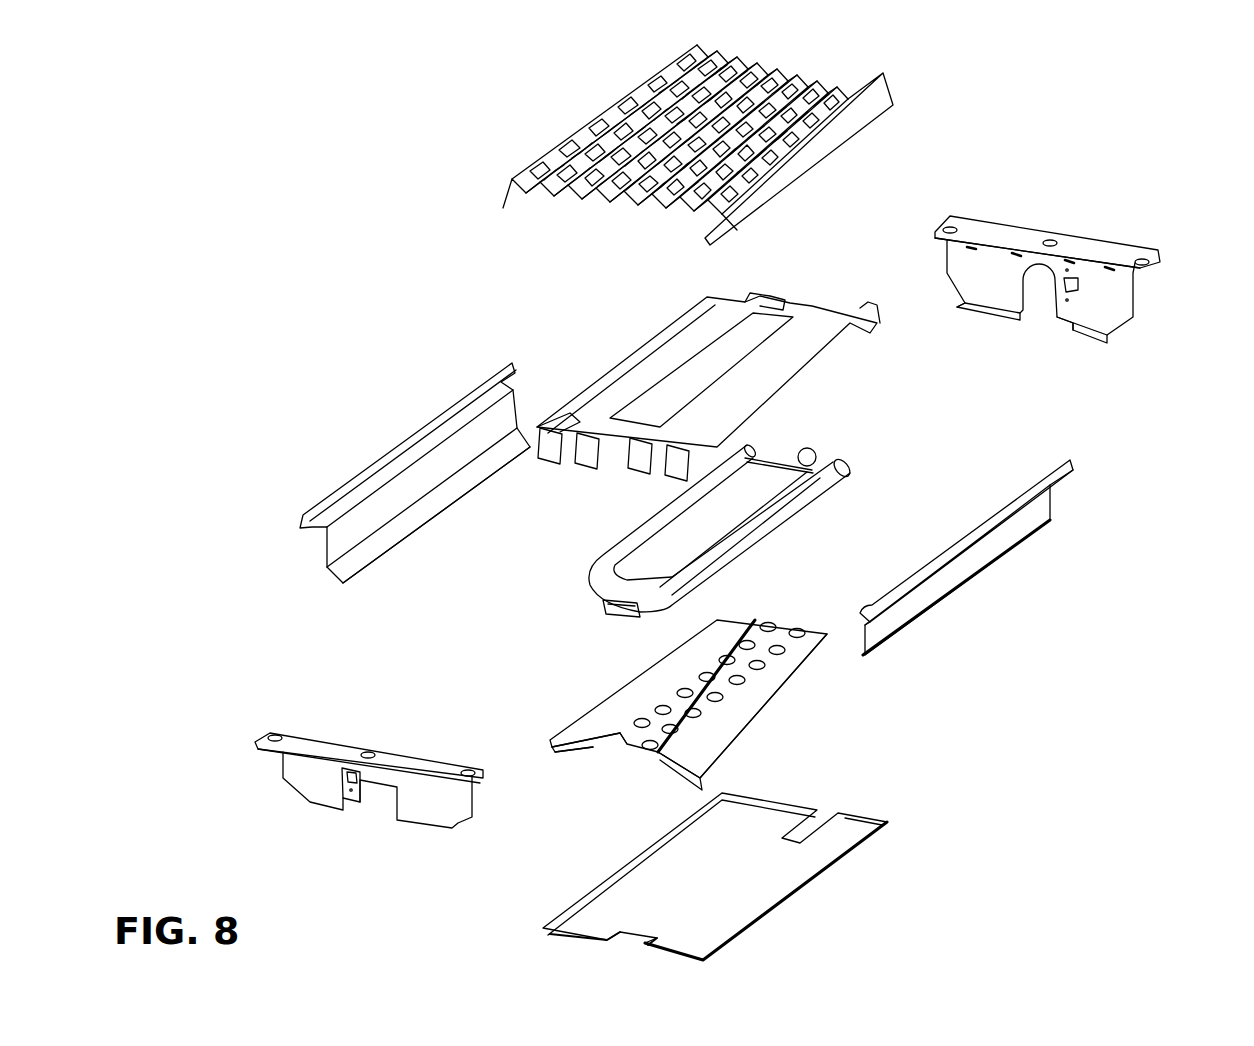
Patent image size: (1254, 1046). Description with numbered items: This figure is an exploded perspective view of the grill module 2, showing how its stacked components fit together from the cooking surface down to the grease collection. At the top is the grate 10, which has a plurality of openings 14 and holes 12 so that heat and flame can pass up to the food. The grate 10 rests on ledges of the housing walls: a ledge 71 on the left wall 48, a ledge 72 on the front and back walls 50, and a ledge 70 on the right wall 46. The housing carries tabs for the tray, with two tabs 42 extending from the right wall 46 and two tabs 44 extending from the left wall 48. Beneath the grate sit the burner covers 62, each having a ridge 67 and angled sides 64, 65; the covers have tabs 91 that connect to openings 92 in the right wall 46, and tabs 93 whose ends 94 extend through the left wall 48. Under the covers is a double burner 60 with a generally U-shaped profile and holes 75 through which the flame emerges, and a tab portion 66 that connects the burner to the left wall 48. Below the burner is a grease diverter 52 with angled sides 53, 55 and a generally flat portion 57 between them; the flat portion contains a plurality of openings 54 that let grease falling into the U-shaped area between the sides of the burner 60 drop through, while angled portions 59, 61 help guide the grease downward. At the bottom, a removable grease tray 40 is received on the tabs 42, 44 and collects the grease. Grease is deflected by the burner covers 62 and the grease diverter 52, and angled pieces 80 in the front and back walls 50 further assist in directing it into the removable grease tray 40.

The grill module 2 is at (1162, 62).
The grate 10 is at (726, 162).
The holes 12 is at (690, 140).
The openings 14 is at (698, 216).
The removable grease tray 40 is at (783, 888).
The tabs 42 is at (975, 320).
The tabs 44 is at (457, 830).
The right wall 46 is at (1052, 316).
The left wall 48 is at (351, 817).
The front and back walls 50 is at (643, 527).
The grease diverter 52 is at (721, 686).
The angled side 53 is at (747, 717).
The openings 54 is at (587, 691).
The angled side 55 is at (680, 671).
The generally flat portion 57 is at (783, 630).
The angled portion 59 is at (577, 753).
The double burner 60 is at (698, 545).
The angled portion 61 is at (810, 697).
The burner cover 62 is at (692, 379).
The angled side 64 is at (787, 352).
The angled side 65 is at (775, 340).
The tab portion 66 is at (610, 608).
The ridge 67 is at (673, 343).
The ledge 70 is at (1047, 275).
The ledge 71 is at (303, 744).
The ledge 72 is at (313, 527).
The holes 75 is at (605, 565).
The angled pieces 80 is at (353, 565).
The tabs 91 is at (860, 308).
The openings 92 is at (973, 245).
The tabs 93 is at (648, 470).
The ends 94 is at (595, 460).